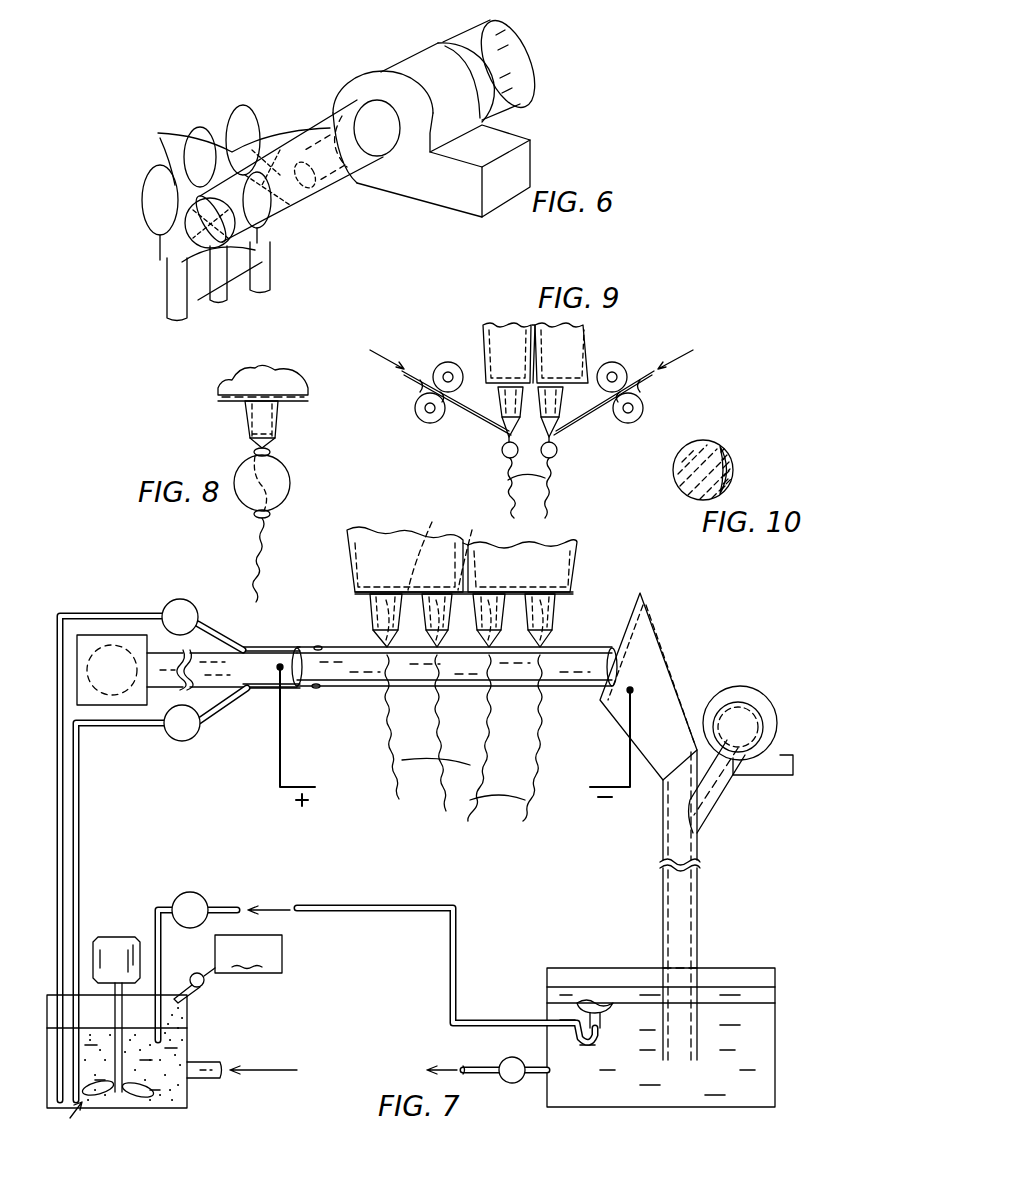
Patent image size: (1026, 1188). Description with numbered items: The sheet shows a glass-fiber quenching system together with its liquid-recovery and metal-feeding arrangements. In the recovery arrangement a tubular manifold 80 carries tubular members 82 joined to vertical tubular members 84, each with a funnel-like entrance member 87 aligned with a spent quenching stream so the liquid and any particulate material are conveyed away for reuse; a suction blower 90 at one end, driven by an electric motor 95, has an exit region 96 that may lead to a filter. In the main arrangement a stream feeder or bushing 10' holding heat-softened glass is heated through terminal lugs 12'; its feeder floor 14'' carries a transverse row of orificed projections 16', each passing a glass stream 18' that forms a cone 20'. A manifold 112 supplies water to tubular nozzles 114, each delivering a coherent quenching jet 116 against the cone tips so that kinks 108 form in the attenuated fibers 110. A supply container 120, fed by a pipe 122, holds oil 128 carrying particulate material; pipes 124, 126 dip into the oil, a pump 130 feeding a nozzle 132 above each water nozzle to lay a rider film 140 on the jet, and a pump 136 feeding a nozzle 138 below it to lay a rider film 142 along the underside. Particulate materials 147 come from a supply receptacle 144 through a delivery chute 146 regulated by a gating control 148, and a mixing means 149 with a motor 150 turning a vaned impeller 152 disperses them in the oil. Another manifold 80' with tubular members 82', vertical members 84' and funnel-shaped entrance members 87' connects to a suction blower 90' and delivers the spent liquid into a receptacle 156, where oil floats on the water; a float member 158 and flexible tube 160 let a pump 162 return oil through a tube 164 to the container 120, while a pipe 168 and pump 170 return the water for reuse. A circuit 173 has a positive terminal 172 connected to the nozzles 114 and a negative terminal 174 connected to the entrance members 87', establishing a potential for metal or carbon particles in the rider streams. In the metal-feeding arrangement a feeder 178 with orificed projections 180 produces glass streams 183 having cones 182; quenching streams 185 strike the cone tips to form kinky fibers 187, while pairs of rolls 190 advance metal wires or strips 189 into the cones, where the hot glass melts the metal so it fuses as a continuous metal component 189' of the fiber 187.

In FIG. 6, the tubular manifold 80 is at (295, 173).
In FIG. 6, the tubular members 82 is at (245, 221).
In FIG. 6, the vertically disposed tubular members 84 is at (223, 281).
In FIG. 6, the funnel-like entrance member 87 is at (228, 151).
In FIG. 6, the suction blower 90 is at (413, 121).
In FIG. 6, the motor 95 is at (447, 30).
In FIG. 6, the exit region 96 is at (518, 160).
In FIG. 8, the stream feeder or bushing 10' is at (233, 374).
In FIG. 7, the stream feeder or bushing 10' is at (489, 560).
In FIG. 7, the terminal lugs 12' is at (472, 550).
In FIG. 7, the feeder floor 14'' is at (416, 548).
In FIG. 8, the orificed projections 16' is at (219, 405).
In FIG. 7, the orificed projections 16' is at (482, 599).
In FIG. 8, the glass stream 18' is at (224, 425).
In FIG. 7, the glass stream 18' is at (474, 635).
In FIG. 8, the cone 20' is at (292, 425).
In FIG. 7, the cone 20' is at (514, 655).
In FIG. 8, the kinks, bends or undulations 108 is at (255, 522).
In FIG. 7, the kinks, bends or undulations 108 is at (400, 718).
In FIG. 7, the kinky fiber or filament 110 is at (410, 773).
In FIG. 7, the manifold 112 is at (100, 635).
In FIG. 7, the tubular nozzles 114 is at (208, 650).
In FIG. 8, the quenching stream or jet 116 is at (240, 462).
In FIG. 7, the quenching stream or jet 116 is at (335, 668).
In FIG. 7, the supply container 120 is at (178, 1106).
In FIG. 7, the pipe 122 is at (222, 1073).
In FIG. 7, the pipe 124 is at (64, 775).
In FIG. 7, the pipe 126 is at (80, 798).
In FIG. 7, the oil 128 is at (190, 1070).
In FIG. 7, the pump 130 is at (178, 600).
In FIG. 7, the nozzle 132 is at (280, 647).
In FIG. 7, the pump 136 is at (167, 737).
In FIG. 7, the nozzle 138 is at (256, 690).
In FIG. 8, the rider stream or film 140 is at (274, 449).
In FIG. 7, the rider stream or film 140 is at (318, 647).
In FIG. 8, the rider stream or film 142 is at (272, 514).
In FIG. 7, the rider stream or film 142 is at (318, 680).
In FIG. 7, the supply receptacle 144 is at (248, 954).
In FIG. 7, the delivery chute 146 is at (192, 998).
In FIG. 7, the particulate materials 147 is at (193, 1024).
In FIG. 7, the gating means or control 148 is at (203, 983).
In FIG. 7, the agitating or mixing means 149 is at (63, 1120).
In FIG. 7, the motor 150 is at (115, 947).
In FIG. 7, the vaned impeller or mixer 152 is at (143, 1093).
In FIG. 7, the receptacle 156 is at (547, 1010).
In FIG. 7, the float member 158 is at (607, 997).
In FIG. 7, the flexible tube 160 is at (222, 905).
In FIG. 7, the pump 162 is at (197, 893).
In FIG. 7, the tube 164 is at (156, 906).
In FIG. 7, the pipe 168 is at (537, 1078).
In FIG. 7, the pump 170 is at (505, 1062).
In FIG. 7, the positive terminal 172 is at (297, 647).
In FIG. 7, the circuit 173 is at (280, 767).
In FIG. 7, the negative terminal 174 is at (628, 692).
In FIG. 9, the feeder or bushing 178 is at (485, 323).
In FIG. 9, the orificed depending projections 180 is at (464, 378).
In FIG. 9, the cone-shaped regions 182 is at (505, 434).
In FIG. 9, the glass streams 183 is at (502, 449).
In FIG. 9, the quenching streams 185 is at (506, 460).
In FIG. 9, the fibers or filaments 187 is at (543, 483).
In FIG. 10, the fibers or filaments 187 is at (707, 446).
In FIG. 9, the wires or strips of metal 189 is at (531, 346).
In FIG. 9, the pairs of rolls 190 is at (425, 383).
In FIG. 7, the tubular manifold 80' is at (732, 708).
In FIG. 7, the tubular members 82' is at (733, 786).
In FIG. 7, the vertically disposed tubular members 84' is at (711, 905).
In FIG. 7, the funnel-shaped entrance member 87' is at (656, 686).
In FIG. 7, the suction blower 90' is at (748, 719).
In FIG. 10, the metal component 189' is at (758, 466).